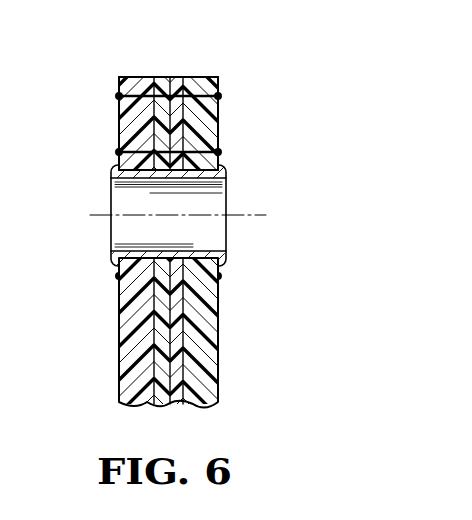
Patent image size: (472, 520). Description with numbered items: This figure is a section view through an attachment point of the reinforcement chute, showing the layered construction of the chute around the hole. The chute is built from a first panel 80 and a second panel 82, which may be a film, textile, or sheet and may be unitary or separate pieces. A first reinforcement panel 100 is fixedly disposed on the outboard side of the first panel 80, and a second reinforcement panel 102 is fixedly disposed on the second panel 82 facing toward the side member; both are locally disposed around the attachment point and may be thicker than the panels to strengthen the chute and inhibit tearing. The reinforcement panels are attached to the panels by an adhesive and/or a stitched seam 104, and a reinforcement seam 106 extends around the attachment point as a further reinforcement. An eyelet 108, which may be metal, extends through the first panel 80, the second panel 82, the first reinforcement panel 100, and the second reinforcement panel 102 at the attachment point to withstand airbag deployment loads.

The first panel 80 is at (174, 76).
The second panel 82 is at (163, 76).
The first reinforcement panel 100 is at (218, 103).
The second reinforcement panel 102 is at (118, 77).
The stitched seam 104 is at (117, 96).
The reinforcement seam 106 is at (116, 276).
The eyelet 108 is at (227, 206).